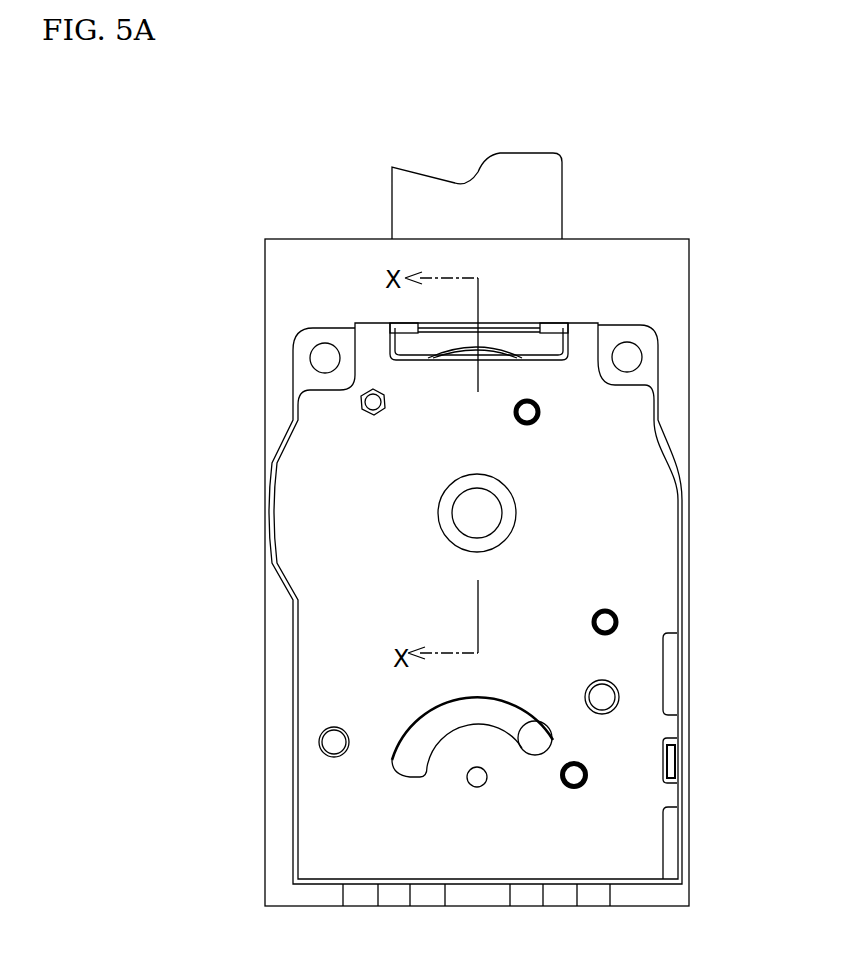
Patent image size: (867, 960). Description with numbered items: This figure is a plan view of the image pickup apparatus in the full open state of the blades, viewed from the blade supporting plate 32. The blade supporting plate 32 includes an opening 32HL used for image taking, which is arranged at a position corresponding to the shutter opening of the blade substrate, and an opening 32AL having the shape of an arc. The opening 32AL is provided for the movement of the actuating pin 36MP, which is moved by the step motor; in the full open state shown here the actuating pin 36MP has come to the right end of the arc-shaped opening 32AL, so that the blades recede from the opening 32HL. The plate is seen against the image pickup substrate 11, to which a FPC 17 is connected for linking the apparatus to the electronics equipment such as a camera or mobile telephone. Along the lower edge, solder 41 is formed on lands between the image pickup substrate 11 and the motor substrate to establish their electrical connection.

The image pickup substrate 11 is at (665, 285).
The FPC 17 is at (550, 203).
The blade supporting plate 32 is at (514, 603).
The opening 32HL is at (438, 513).
The opening 32AL is at (482, 735).
The actuating pin 36MP is at (532, 740).
The solder 41 is at (588, 898).